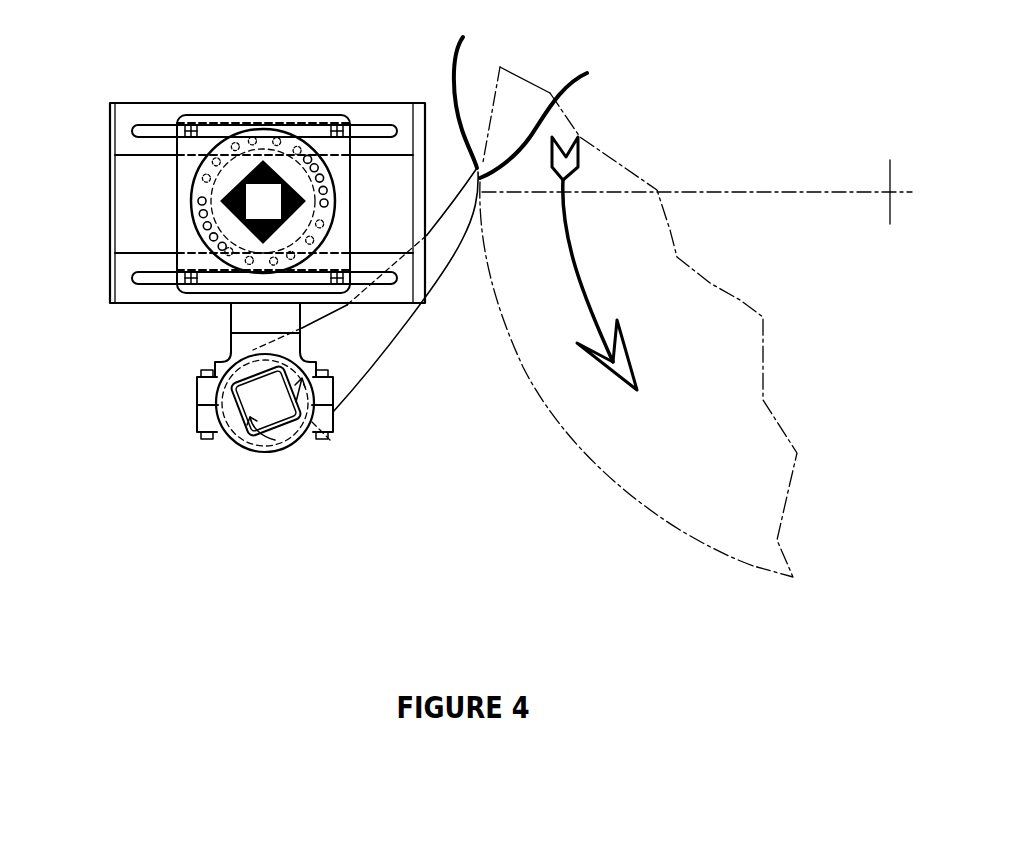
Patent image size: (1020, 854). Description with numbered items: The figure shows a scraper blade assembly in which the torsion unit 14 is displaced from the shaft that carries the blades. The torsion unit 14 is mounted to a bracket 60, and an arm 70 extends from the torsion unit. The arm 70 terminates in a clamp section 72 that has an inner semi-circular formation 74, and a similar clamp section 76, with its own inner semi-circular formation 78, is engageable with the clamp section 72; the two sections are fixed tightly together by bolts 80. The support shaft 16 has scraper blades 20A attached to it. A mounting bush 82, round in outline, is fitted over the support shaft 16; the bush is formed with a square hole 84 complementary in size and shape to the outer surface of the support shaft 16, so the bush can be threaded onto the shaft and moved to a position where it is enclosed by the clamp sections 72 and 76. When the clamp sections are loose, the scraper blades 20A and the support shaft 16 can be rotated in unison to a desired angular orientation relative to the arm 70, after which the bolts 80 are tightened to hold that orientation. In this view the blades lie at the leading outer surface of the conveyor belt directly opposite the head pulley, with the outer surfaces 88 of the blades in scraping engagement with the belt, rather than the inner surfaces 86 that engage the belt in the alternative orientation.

The torsion unit 14 is at (297, 120).
The support shaft 16 is at (230, 445).
The scraper blades 20A is at (402, 352).
The bracket 60 is at (110, 207).
The arm 70 is at (242, 323).
The clamp section 72 is at (220, 360).
The inner semi-circular formation 74 is at (297, 443).
The clamp section 76 is at (203, 413).
The inner semi-circular formation 78 is at (247, 455).
The bolts 80 is at (330, 440).
The mounting bush 82 is at (275, 440).
The square hole 84 is at (285, 445).
The inner surfaces 86 is at (465, 38).
The outer surfaces 88 is at (588, 73).